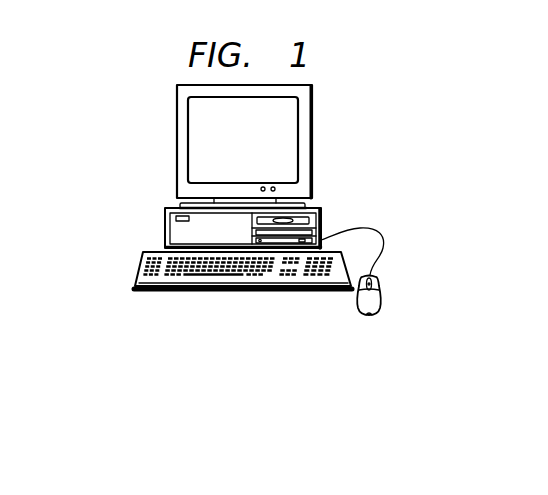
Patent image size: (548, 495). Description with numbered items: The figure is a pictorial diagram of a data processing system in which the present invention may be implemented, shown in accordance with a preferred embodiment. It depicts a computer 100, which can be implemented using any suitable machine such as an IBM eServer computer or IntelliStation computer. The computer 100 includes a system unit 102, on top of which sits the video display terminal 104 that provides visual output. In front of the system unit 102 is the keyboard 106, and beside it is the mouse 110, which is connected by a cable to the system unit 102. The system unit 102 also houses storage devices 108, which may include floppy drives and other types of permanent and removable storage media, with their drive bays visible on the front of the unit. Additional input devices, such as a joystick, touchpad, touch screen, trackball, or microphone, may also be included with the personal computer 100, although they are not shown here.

The computer 100 is at (116, 131).
The system unit 102 is at (165, 228).
The video display terminal 104 is at (313, 143).
The keyboard 106 is at (162, 292).
The storage devices 108 is at (320, 223).
The mouse 110 is at (370, 316).